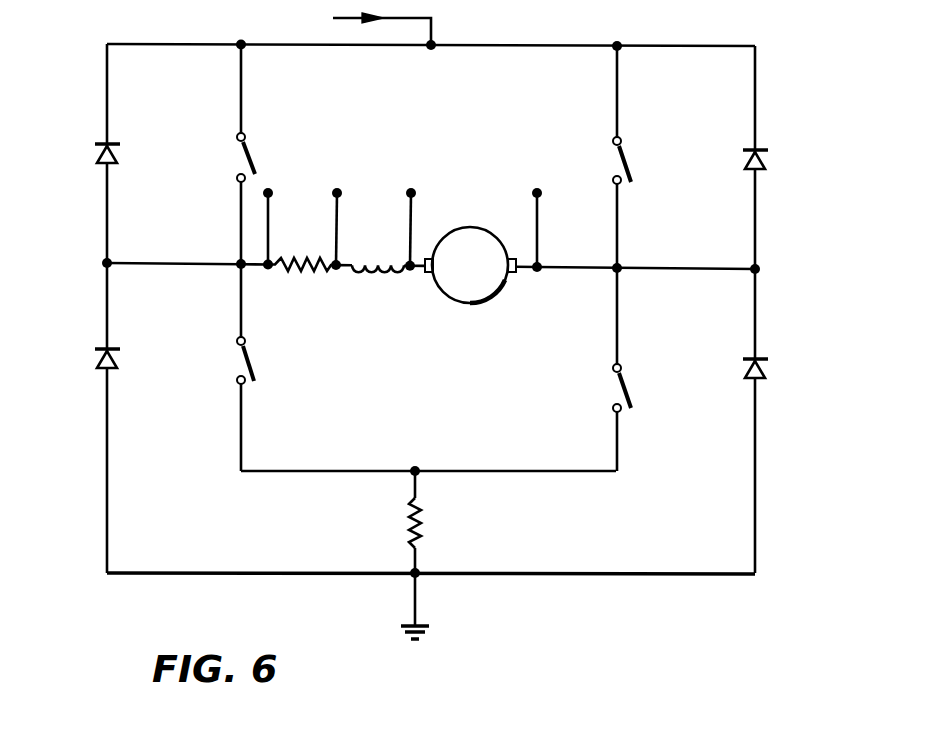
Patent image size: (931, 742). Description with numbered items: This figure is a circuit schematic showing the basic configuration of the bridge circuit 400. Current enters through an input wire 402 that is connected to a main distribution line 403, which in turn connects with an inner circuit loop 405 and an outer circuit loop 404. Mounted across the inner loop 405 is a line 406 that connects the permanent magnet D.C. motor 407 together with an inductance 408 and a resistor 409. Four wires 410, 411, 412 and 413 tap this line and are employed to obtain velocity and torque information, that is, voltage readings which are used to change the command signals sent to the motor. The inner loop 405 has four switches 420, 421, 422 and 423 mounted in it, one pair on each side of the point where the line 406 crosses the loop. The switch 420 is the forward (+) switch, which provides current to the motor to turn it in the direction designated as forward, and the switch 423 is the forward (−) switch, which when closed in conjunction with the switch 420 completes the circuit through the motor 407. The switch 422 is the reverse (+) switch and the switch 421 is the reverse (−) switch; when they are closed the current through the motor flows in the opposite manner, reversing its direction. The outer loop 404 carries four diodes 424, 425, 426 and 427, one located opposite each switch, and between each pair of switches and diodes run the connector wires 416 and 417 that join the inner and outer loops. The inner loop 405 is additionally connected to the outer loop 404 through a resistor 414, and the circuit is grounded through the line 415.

The bridge circuit 400 is at (752, 36).
The input wire 402 is at (433, 31).
The main distribution line 403 is at (537, 45).
The outer circuit loop 404 is at (658, 577).
The inner circuit loop 405 is at (617, 471).
The line 406 is at (562, 268).
The permanent magnet D.C. motor 407 is at (480, 300).
The inductance 408 is at (388, 272).
The resistor 409 is at (292, 270).
The wire 410 is at (268, 190).
The wire 411 is at (338, 190).
The wire 412 is at (412, 190).
The wire 413 is at (537, 190).
The resistor 414 is at (421, 527).
The line 415 is at (418, 613).
The connector wire 416 is at (207, 262).
The connector wire 417 is at (686, 245).
The forward (+) switch 420 is at (246, 160).
The reverse (−) switch 421 is at (240, 364).
The reverse (+) switch 422 is at (626, 152).
The forward (−) switch 423 is at (630, 394).
The diode 424 is at (96, 156).
The diode 425 is at (96, 358).
The diode 426 is at (766, 162).
The diode 427 is at (766, 374).